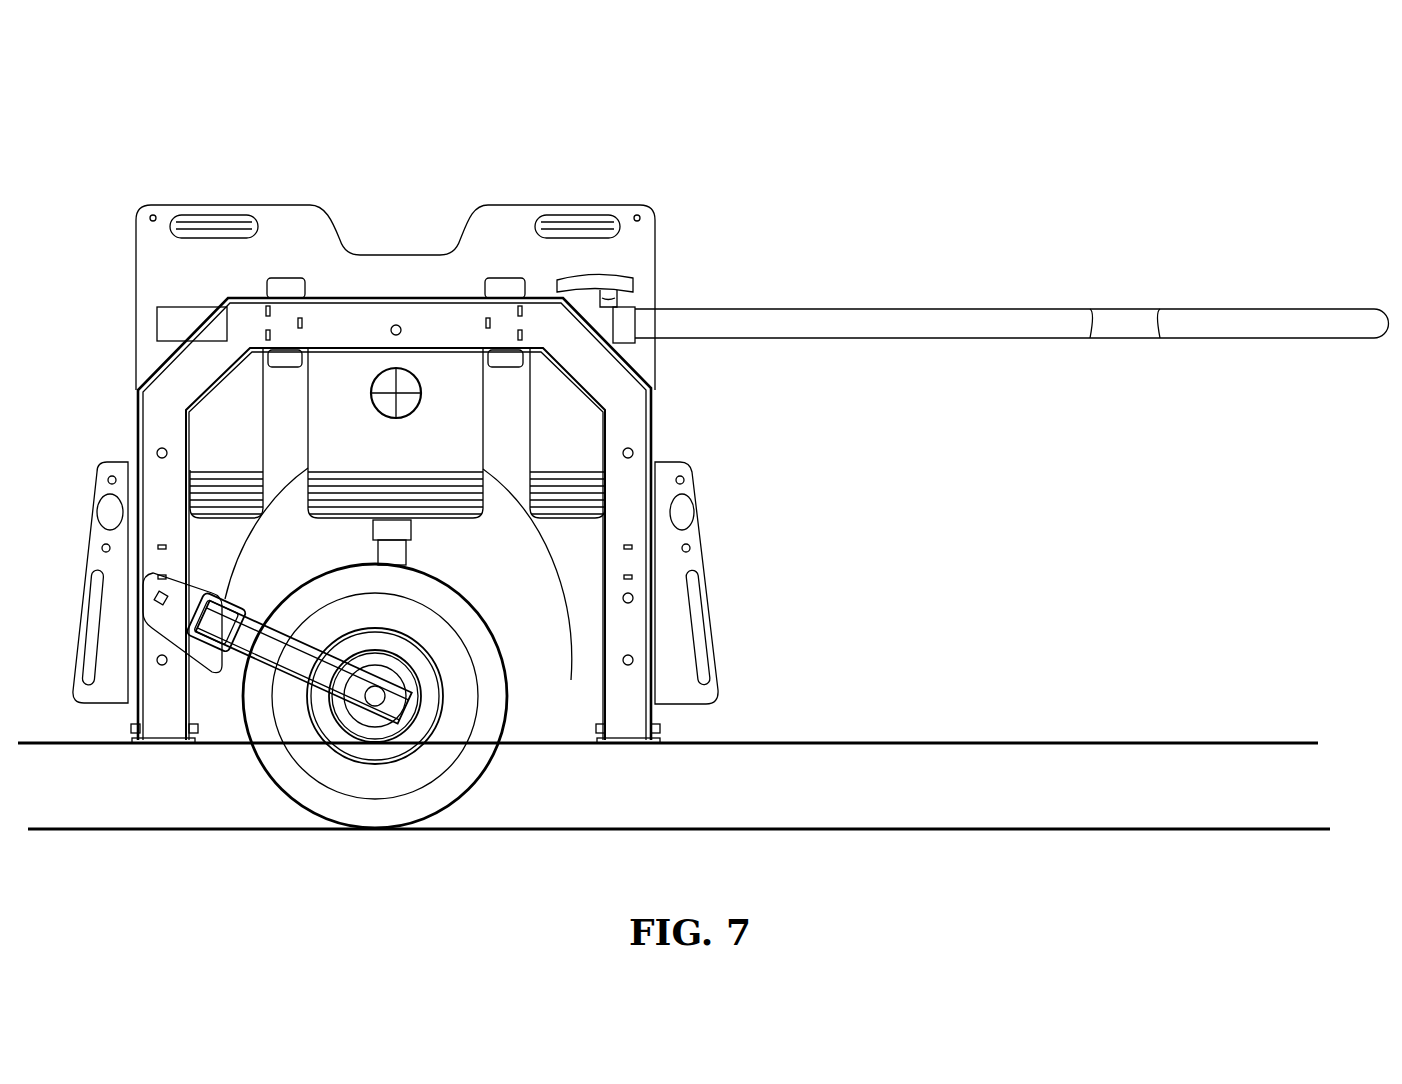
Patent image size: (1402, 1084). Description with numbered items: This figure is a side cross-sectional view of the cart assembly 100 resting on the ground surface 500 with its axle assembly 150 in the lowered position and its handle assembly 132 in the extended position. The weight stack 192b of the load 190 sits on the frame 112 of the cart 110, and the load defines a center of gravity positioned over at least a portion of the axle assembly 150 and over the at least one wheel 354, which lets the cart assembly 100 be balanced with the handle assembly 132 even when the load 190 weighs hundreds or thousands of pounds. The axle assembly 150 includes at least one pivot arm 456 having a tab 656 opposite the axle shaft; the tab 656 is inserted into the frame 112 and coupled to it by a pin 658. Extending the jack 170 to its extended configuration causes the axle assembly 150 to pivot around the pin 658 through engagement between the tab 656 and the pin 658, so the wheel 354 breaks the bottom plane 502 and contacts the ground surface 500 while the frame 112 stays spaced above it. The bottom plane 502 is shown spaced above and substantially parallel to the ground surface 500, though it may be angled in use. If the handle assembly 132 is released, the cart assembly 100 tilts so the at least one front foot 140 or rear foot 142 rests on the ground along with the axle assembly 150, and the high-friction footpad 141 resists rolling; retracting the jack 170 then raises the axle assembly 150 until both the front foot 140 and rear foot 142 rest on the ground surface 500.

The cart assembly 100 is at (68, 116).
The load 190 is at (486, 226).
The weight stack 192b is at (395, 238).
The cart 110 is at (358, 509).
The frame 112 is at (140, 392).
The handle assembly 132 is at (833, 321).
The jack 170 is at (398, 548).
The axle assembly 150 is at (463, 623).
The wheel 354 is at (375, 696).
The pivot arm 456 is at (402, 698).
The tab 656 is at (167, 574).
The pin 658 is at (155, 596).
The front foot 140 is at (73, 582).
The footpad 141 is at (143, 737).
The rear foot 142 is at (775, 583).
The ground surface 500 is at (133, 822).
The bottom plane 502 is at (850, 748).